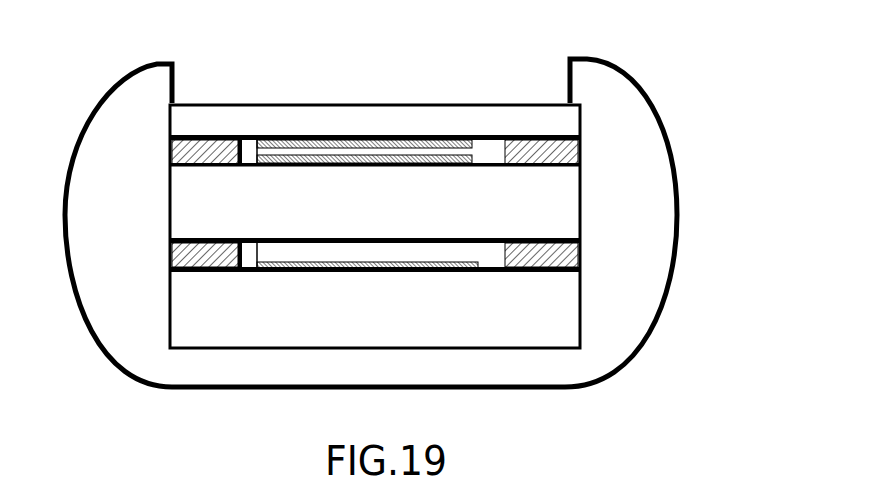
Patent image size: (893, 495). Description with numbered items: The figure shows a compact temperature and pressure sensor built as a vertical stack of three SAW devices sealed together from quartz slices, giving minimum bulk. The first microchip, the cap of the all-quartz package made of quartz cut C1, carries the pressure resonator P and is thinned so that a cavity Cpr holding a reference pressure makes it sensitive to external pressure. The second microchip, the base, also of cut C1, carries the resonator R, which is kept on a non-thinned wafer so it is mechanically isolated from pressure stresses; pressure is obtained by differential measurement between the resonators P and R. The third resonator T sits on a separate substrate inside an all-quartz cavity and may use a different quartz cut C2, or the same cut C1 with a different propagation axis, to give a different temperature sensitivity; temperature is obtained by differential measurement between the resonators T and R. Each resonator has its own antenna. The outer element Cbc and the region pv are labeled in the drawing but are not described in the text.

The battery can Cbc is at (637, 312).
The quartz cut C1 is at (375, 194).
The quartz cut C2 is at (375, 309).
The photovoltaic cell region pv is at (168, 153).
The resonator P is at (362, 160).
The resonator R is at (438, 158).
The cavity Cpr is at (290, 162).
The resonator T is at (353, 270).